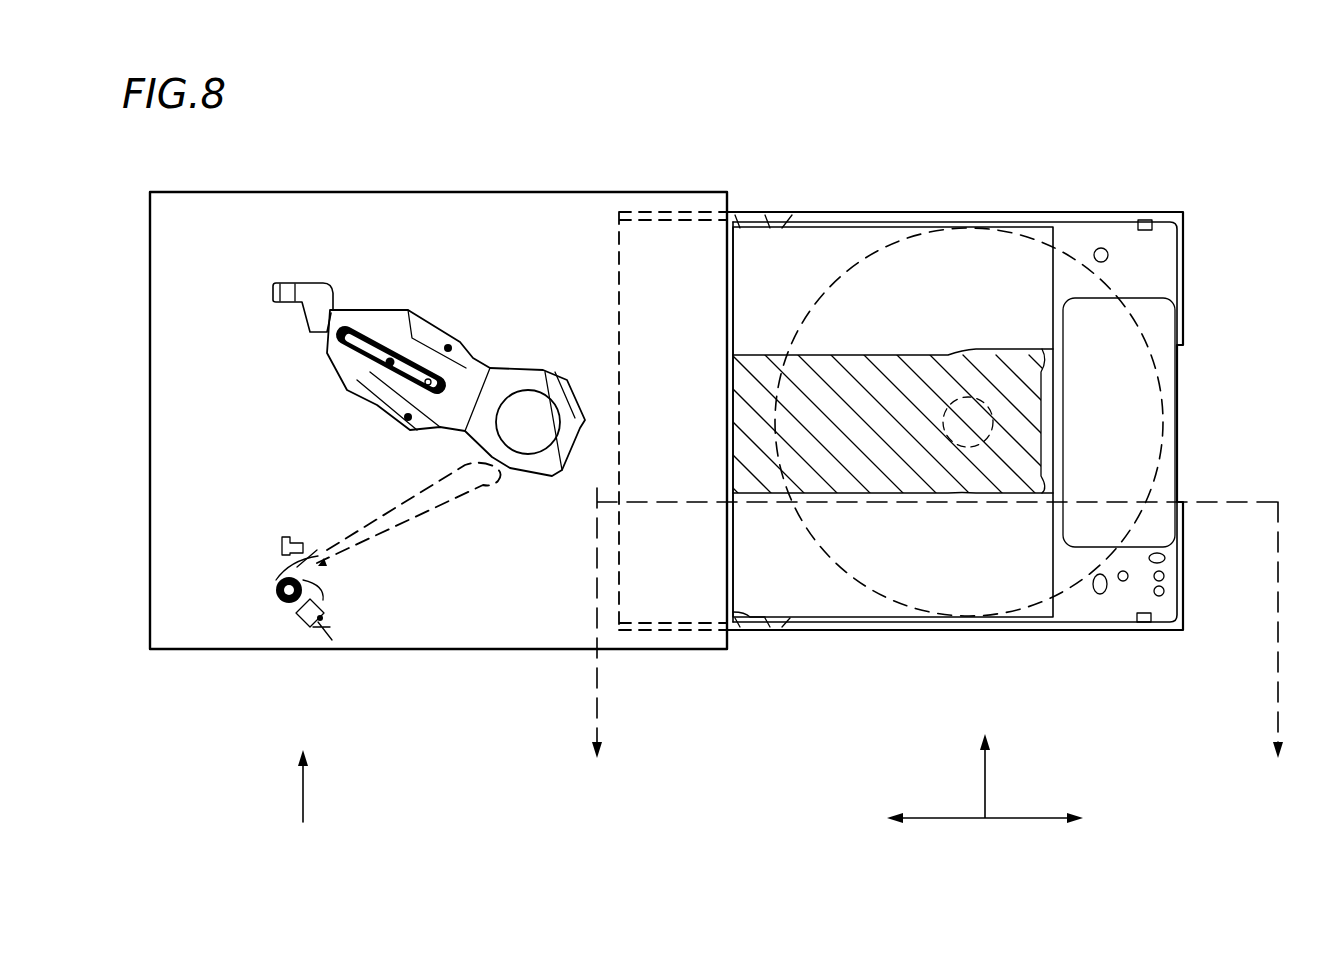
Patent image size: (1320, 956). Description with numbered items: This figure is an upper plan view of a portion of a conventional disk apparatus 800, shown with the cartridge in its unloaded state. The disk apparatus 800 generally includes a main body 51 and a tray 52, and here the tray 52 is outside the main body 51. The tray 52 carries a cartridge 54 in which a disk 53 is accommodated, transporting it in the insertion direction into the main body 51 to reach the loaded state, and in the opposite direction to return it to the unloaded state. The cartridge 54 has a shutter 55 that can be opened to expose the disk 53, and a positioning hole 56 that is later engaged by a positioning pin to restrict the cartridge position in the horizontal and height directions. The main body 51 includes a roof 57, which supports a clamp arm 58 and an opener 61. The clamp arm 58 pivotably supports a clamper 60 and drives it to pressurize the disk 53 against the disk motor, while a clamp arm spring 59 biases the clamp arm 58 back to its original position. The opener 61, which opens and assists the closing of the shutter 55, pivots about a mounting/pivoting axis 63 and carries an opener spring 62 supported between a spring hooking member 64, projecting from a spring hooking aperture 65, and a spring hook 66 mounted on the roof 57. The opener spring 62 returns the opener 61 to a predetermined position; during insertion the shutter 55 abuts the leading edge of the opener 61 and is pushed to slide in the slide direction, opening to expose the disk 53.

The disk apparatus 800 is at (1205, 74).
The main body 51 is at (647, 192).
The tray 52 is at (1100, 212).
The disk 53 is at (1073, 253).
The cartridge 54 is at (831, 218).
The shutter 55 is at (827, 460).
The positioning hole 56 is at (1101, 248).
The roof 57 is at (203, 237).
The clamp arm 58 is at (333, 312).
The clamp arm spring 59 is at (410, 307).
The clamper 60 is at (537, 397).
The opener 61 is at (382, 530).
The opener spring 62 is at (300, 603).
The mounting/pivoting axis 63 is at (290, 574).
The spring hooking member 64 is at (321, 622).
The spring hooking aperture 65 is at (270, 552).
The spring hook 66 is at (312, 627).